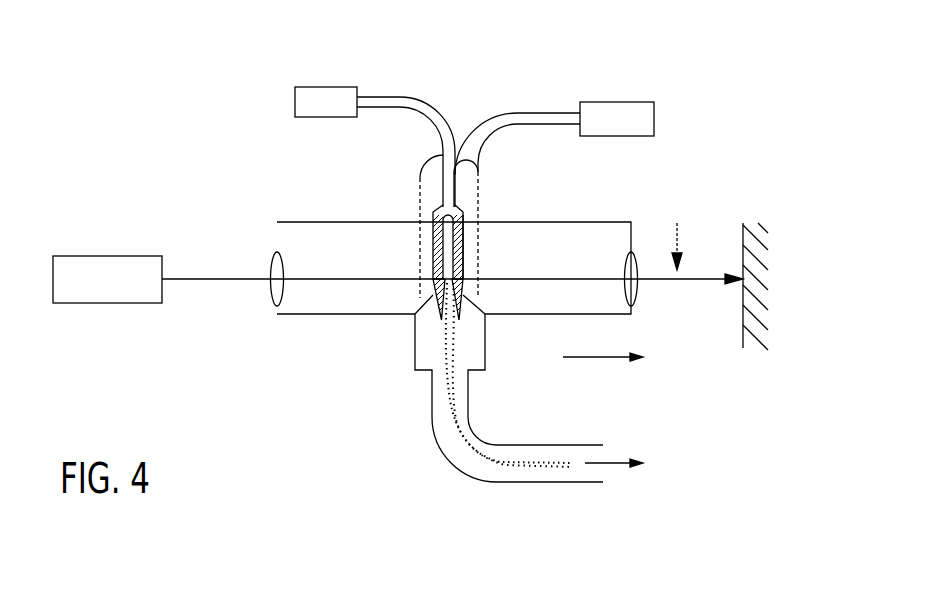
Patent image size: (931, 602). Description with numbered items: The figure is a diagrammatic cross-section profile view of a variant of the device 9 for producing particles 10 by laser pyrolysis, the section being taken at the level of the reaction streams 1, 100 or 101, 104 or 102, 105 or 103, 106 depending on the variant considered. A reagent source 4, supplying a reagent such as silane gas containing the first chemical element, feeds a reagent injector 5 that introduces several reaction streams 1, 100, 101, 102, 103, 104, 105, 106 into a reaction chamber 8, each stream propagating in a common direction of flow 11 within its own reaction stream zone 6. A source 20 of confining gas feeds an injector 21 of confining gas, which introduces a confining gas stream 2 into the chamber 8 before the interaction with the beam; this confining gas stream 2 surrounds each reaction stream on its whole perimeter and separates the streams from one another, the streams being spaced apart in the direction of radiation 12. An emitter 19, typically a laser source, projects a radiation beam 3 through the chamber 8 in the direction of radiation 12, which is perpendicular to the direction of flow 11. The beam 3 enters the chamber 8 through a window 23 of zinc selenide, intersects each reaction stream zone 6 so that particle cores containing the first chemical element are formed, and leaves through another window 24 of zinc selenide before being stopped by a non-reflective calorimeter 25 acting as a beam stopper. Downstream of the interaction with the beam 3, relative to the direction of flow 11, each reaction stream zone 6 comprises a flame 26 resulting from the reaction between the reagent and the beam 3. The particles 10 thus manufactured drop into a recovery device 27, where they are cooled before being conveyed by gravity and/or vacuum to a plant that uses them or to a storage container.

The reaction stream 1 is at (348, 232).
The reaction stream 101 is at (348, 232).
The reaction stream 102 is at (348, 232).
The reaction stream 103 is at (438, 250).
The confining gas stream 2 is at (478, 240).
The radiation beam 3 is at (205, 282).
The reagent source 4 is at (617, 107).
The reagent injector 5 is at (443, 207).
The reaction stream zone 6 is at (415, 314).
The reaction chamber 8 is at (601, 240).
The device 9 is at (174, 151).
The particles 10 is at (443, 385).
The direction of flow 11 is at (677, 240).
The direction of radiation 12 is at (595, 358).
The emitter 19 is at (73, 303).
The source of confining gas 20 is at (320, 92).
The injector of confining gas 21 is at (490, 220).
The window 23 is at (280, 292).
The window 24 is at (633, 290).
The non-reflective calorimeter 25 is at (745, 330).
The flame 26 is at (485, 314).
The recovery device 27 is at (473, 366).
The reaction stream 100 is at (576, 215).
The reaction stream 104 is at (576, 215).
The reaction stream 105 is at (576, 215).
The reaction stream 106 is at (470, 248).